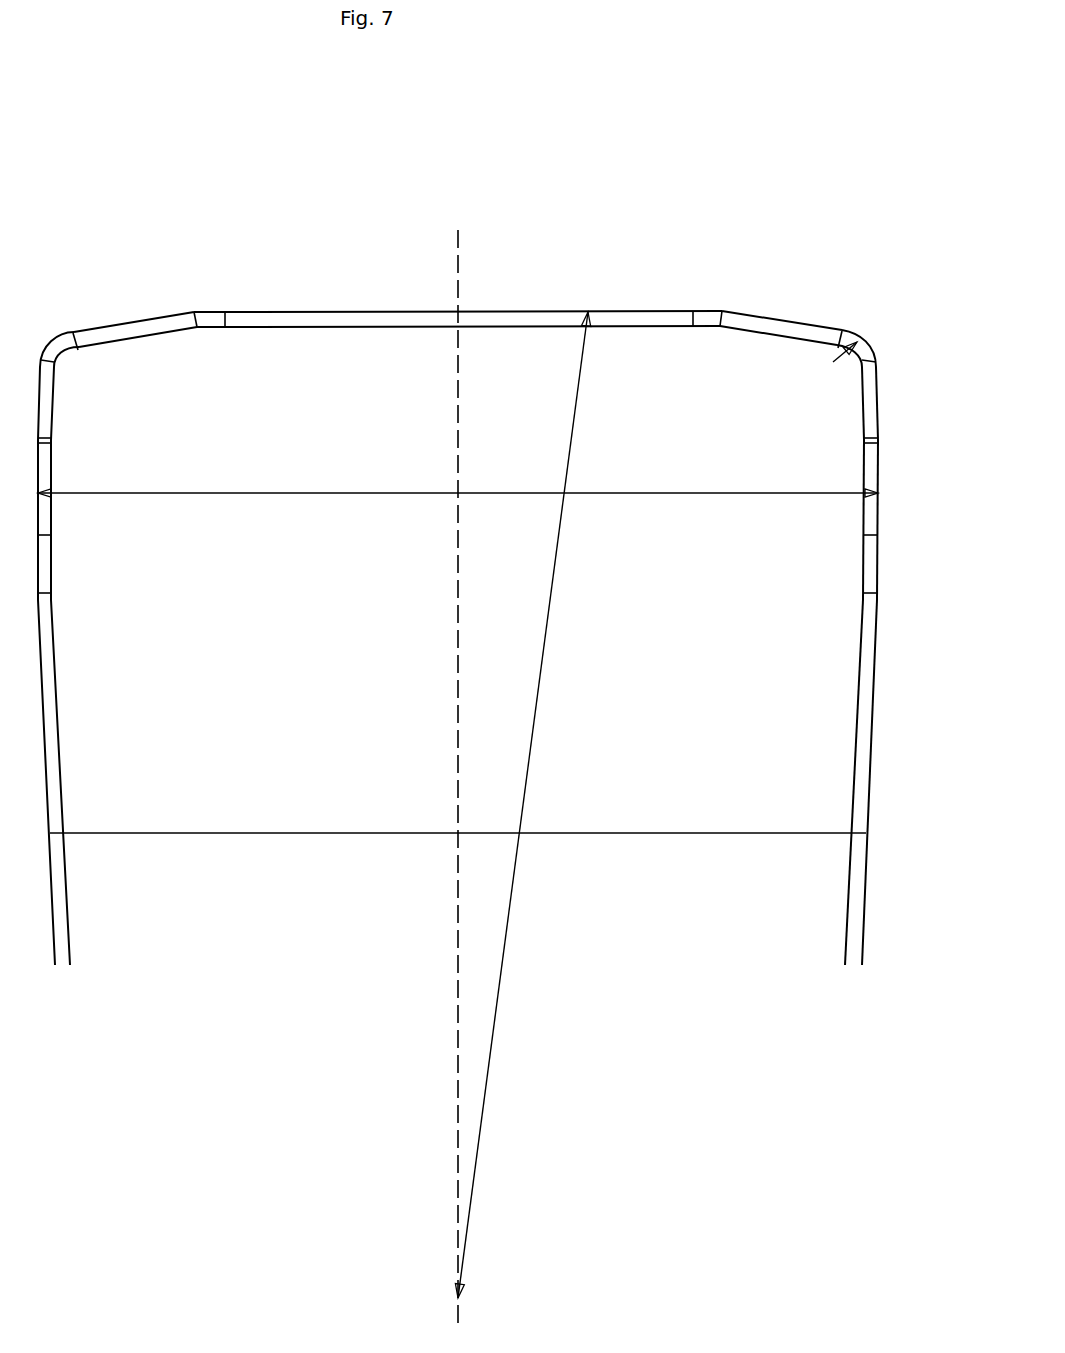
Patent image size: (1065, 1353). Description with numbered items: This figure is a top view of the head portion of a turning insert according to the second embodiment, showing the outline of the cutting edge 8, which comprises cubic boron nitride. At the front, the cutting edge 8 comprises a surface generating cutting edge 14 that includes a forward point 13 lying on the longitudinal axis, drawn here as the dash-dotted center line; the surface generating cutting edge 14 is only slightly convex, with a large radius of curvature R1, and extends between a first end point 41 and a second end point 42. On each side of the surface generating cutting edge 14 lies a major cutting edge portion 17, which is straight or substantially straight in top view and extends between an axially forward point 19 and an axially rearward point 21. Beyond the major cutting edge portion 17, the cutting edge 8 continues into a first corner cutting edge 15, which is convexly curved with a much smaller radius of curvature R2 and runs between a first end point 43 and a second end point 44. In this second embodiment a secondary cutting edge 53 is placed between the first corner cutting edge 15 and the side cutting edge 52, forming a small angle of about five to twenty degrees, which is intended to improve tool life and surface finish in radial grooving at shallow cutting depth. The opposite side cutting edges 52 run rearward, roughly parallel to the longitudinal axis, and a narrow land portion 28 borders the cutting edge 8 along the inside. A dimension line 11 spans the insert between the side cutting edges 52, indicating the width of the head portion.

The cutting edge 8 is at (330, 310).
The frame width 11 is at (458, 478).
The forward point 13 is at (455, 310).
The surface generating cutting edge 14 is at (533, 311).
The first corner cutting edge 15 is at (853, 336).
The major cutting edge portion 17 is at (773, 320).
The axially forward point 19 is at (721, 323).
The axially rearward point 21 is at (843, 332).
The land portion 28 is at (862, 792).
The first end point 41 is at (694, 325).
The second end point 42 is at (223, 312).
The first end point 43 is at (841, 330).
The second end point 44 is at (867, 360).
The side cutting edge 52 is at (880, 503).
The secondary cutting edge 53 is at (873, 390).
The radius of curvature of the surface generating cutting edge R1 is at (554, 805).
The radius of curvature of the first corner cutting edge R2 is at (829, 360).